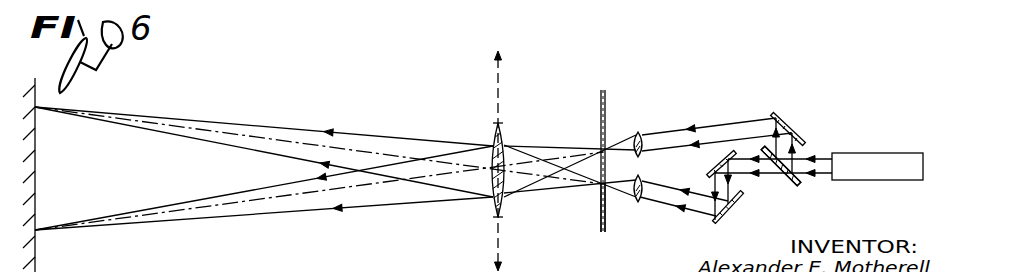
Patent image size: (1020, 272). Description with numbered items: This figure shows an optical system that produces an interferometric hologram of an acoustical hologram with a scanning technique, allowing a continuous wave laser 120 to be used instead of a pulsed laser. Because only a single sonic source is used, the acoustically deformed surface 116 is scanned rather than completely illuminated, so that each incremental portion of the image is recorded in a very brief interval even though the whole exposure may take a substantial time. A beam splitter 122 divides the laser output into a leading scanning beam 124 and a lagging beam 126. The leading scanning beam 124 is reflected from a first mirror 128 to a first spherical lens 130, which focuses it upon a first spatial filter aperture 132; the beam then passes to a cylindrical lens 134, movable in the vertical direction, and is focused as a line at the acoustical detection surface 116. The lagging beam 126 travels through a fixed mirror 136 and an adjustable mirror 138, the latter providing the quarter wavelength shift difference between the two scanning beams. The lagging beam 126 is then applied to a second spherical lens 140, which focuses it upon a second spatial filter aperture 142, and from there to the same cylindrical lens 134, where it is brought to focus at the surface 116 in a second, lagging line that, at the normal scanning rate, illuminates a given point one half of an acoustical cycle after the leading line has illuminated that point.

The acoustical detection surface 116 is at (35, 164).
The continuous wave laser 120 is at (906, 140).
The beam splitter 122 is at (793, 184).
The leading scanning beam 124 is at (800, 150).
The lagging beam 126 is at (767, 176).
The first mirror 128 is at (803, 138).
The first spherical lens 130 is at (641, 133).
The first spatial filter aperture 132 is at (602, 150).
The cylindrical lens 134 is at (504, 137).
The fixed mirror 136 is at (720, 165).
The adjustable mirror 138 is at (720, 219).
The second spherical lens 140 is at (637, 203).
The second spatial filter aperture 142 is at (600, 190).